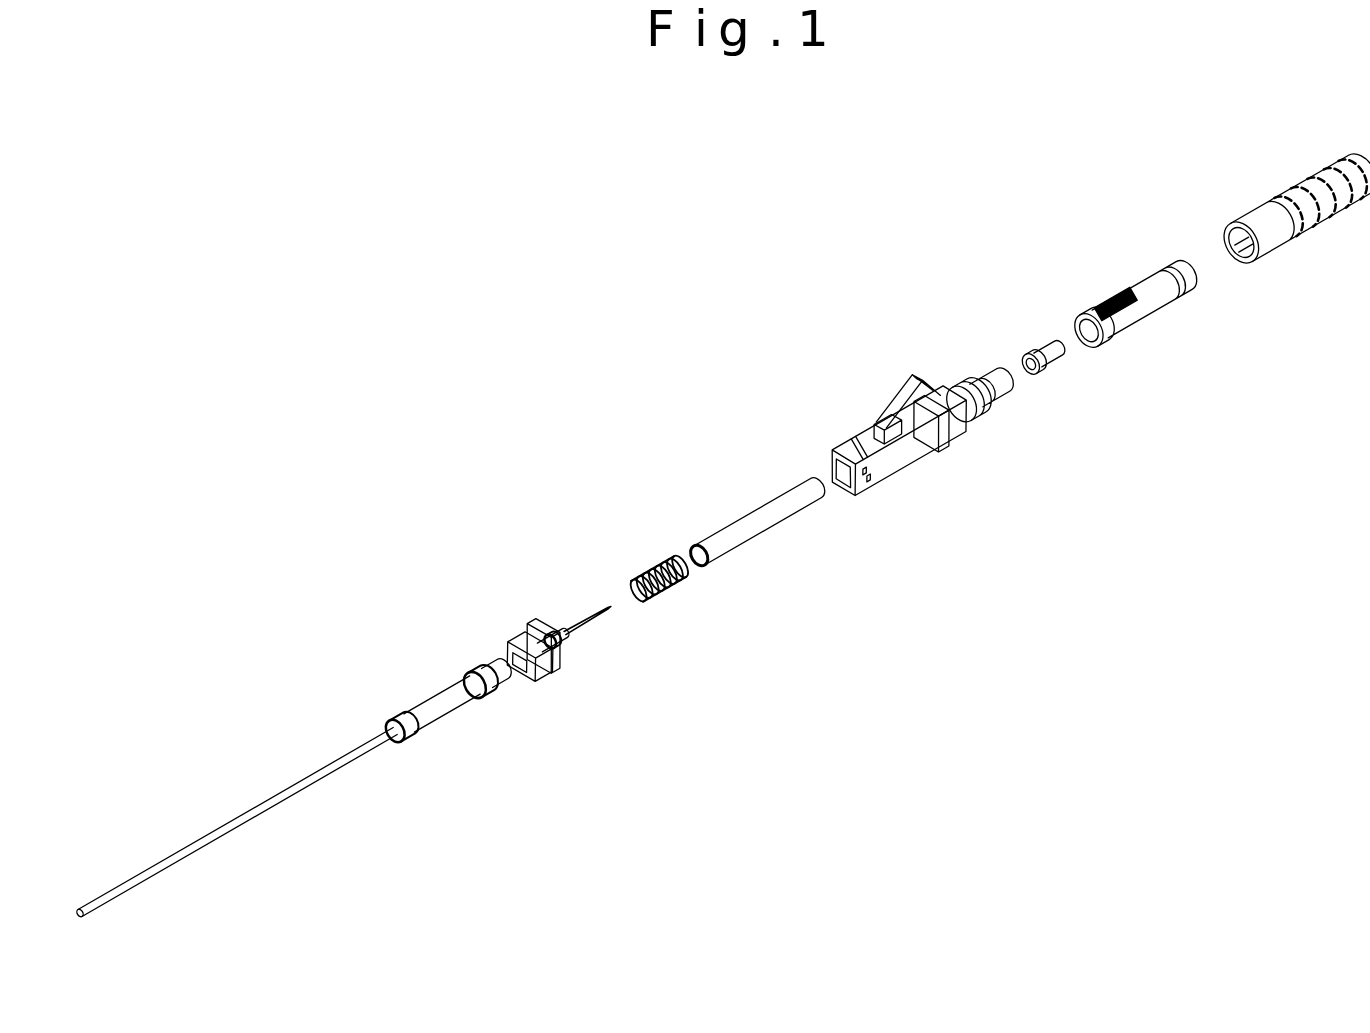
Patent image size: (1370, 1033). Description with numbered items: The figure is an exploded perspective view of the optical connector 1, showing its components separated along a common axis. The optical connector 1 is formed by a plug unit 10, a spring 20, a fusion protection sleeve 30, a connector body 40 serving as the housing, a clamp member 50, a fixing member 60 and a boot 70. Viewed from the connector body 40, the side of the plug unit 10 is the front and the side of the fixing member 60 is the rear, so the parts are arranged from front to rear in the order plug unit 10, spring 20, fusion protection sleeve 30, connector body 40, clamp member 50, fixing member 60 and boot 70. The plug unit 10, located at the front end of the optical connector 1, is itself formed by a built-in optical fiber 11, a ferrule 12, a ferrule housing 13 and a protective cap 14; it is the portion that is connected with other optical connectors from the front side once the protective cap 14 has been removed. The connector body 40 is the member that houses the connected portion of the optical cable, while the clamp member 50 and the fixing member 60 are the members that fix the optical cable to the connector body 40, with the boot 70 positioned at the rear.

The optical connector 1 is at (342, 374).
The plug unit 10 is at (549, 472).
The built-in optical fiber 11 is at (597, 618).
The ferrule 12 is at (505, 652).
The ferrule housing 13 is at (541, 632).
The protective cap 14 is at (450, 702).
The spring 20 is at (663, 596).
The fusion protection sleeve 30 is at (768, 523).
The connector body 40 is at (910, 455).
The clamp member 50 is at (1052, 338).
The fixing member 60 is at (1142, 280).
The boot 70 is at (1257, 223).